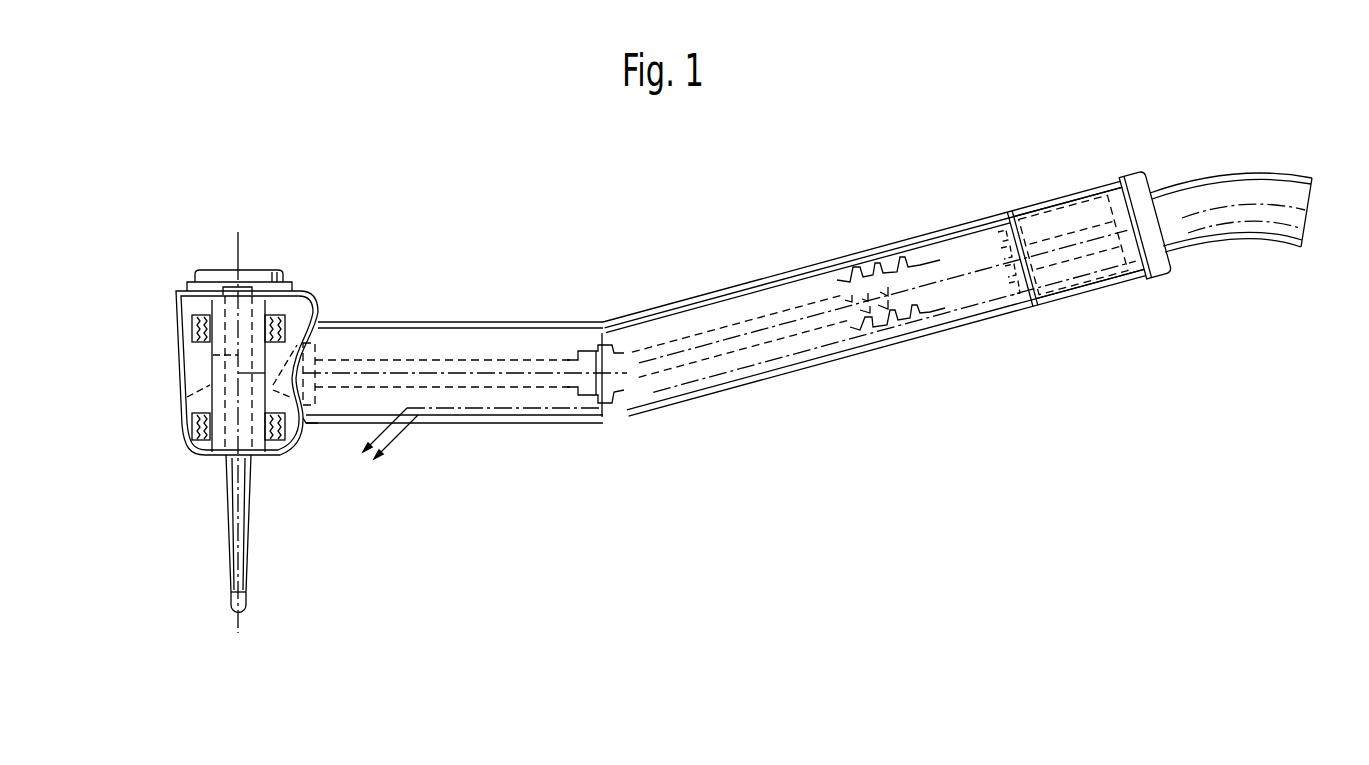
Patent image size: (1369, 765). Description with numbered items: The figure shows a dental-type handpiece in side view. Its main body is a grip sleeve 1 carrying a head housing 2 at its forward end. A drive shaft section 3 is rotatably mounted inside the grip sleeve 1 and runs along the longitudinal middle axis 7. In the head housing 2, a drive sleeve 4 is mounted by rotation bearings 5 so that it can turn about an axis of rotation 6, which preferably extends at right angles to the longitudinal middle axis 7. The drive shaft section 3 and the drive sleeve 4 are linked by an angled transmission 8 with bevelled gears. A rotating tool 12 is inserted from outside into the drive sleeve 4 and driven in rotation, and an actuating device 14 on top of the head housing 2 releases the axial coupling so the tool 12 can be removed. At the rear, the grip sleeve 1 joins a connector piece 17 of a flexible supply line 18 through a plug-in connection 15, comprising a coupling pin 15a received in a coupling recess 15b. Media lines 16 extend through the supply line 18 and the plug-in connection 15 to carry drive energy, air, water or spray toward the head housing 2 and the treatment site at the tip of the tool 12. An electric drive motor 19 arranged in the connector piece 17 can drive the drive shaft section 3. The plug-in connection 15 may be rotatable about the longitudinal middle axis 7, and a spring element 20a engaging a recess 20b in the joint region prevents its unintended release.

The grip sleeve 1 is at (540, 322).
The head housing 2 is at (320, 300).
The drive shaft section 3 is at (541, 389).
The drive sleeve 4 is at (217, 365).
The rotation bearings 5 is at (182, 430).
The axis of rotation 6 is at (237, 244).
The longitudinal middle axis 7 is at (433, 372).
The angled transmission 8 is at (310, 423).
The rotating tool 12 is at (231, 522).
The actuating device 14 is at (270, 262).
The plug-in connection 15 is at (991, 208).
The coupling pin 15a is at (945, 250).
The coupling recess 15b is at (913, 262).
The media lines 16 is at (452, 421).
The connector piece 17 is at (1130, 283).
The flexible supply line 18 is at (1218, 197).
The electric drive motor 19 is at (1070, 202).
The spring element 20a is at (1009, 305).
The recess 20b is at (1012, 279).